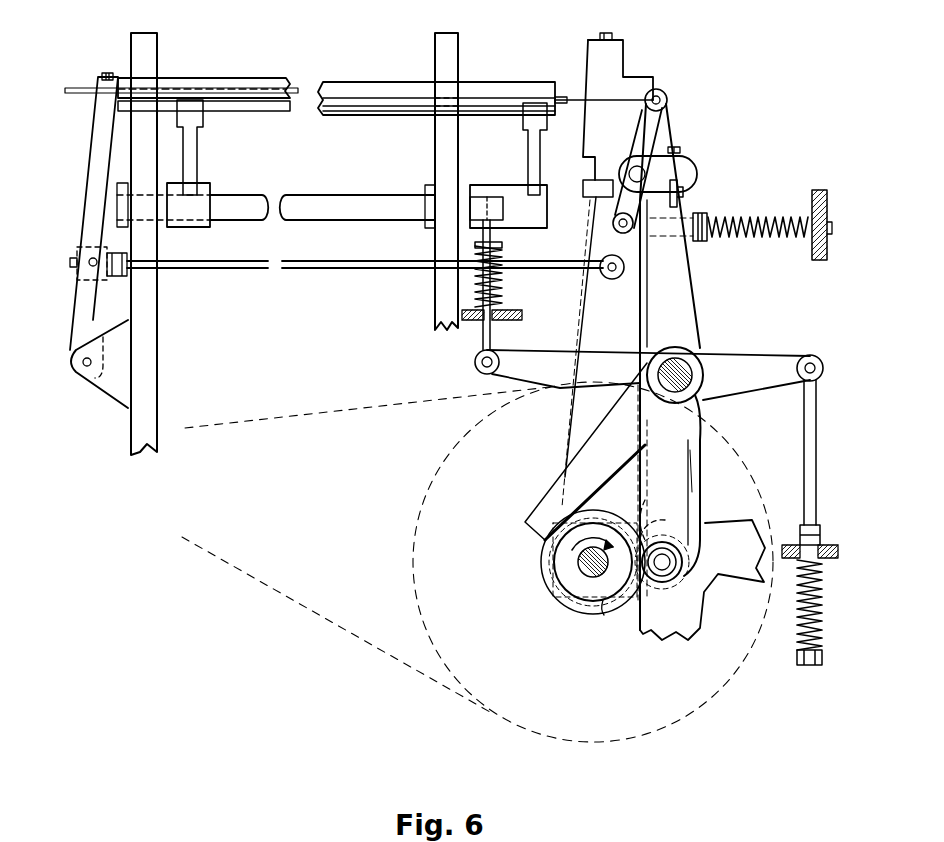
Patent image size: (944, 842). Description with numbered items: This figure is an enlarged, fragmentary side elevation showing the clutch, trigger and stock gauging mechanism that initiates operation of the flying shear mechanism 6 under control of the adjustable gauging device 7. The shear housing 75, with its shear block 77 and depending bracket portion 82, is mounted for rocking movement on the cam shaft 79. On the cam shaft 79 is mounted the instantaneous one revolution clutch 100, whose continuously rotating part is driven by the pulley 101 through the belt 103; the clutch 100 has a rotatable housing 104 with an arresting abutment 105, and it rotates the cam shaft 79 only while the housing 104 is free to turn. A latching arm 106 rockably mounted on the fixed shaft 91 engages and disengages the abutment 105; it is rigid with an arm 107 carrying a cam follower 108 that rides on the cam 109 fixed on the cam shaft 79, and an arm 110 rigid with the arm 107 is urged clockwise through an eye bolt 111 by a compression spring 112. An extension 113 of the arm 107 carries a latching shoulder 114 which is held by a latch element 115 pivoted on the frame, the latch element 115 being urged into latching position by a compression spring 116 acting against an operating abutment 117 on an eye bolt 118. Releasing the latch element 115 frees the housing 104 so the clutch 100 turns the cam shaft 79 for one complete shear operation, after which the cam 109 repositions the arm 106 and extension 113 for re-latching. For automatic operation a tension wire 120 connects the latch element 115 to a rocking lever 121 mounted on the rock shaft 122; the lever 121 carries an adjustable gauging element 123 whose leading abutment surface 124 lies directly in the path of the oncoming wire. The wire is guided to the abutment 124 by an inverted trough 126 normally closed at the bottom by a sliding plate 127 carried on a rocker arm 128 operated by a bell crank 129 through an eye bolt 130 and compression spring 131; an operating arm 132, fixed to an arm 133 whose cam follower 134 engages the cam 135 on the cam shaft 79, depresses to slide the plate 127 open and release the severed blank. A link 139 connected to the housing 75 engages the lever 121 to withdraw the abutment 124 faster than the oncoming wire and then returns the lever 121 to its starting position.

The flying shear mechanism 6 is at (634, 58).
The adjustable gauging device 7 is at (508, 80).
The housing 75 is at (582, 302).
The shear block 77 is at (612, 34).
The cam shaft 79 is at (590, 576).
The bracket portion 82 is at (690, 625).
The shaft 91 is at (690, 360).
The one revolution clutch 100 is at (603, 614).
The pulley 101 is at (440, 658).
The belt 103 is at (338, 627).
The rotatable housing 104 is at (542, 578).
The arresting abutment 105 is at (545, 545).
The latching arm 106 is at (548, 493).
The arm 107 is at (690, 491).
The cam follower 108 is at (690, 566).
The cam 109 is at (598, 512).
The arm 110 is at (747, 392).
The eye bolt 111 is at (806, 434).
The compression spring 112 is at (790, 640).
The extension 113 is at (690, 300).
The latching shoulder 114 is at (680, 190).
The latch element 115 is at (688, 160).
The compression spring 116 is at (797, 240).
The operating abutment 117 is at (700, 242).
The eye bolt 118 is at (628, 232).
The tension wire 120 is at (557, 96).
The rocking lever 121 is at (95, 147).
The rock shaft 122 is at (87, 370).
The gauging element 123 is at (72, 88).
The abutment surface 124 is at (300, 80).
The inverted trough 126 is at (362, 82).
The sliding plate 127 is at (354, 114).
The rocker arm 128 is at (533, 160).
The bell crank 129 is at (514, 178).
The eye bolt 130 is at (500, 245).
The compression spring 131 is at (502, 280).
The operating arm 132 is at (532, 362).
The arm 133 is at (690, 525).
The cam follower 134 is at (658, 588).
The cam 135 is at (648, 522).
The link 139 is at (362, 270).